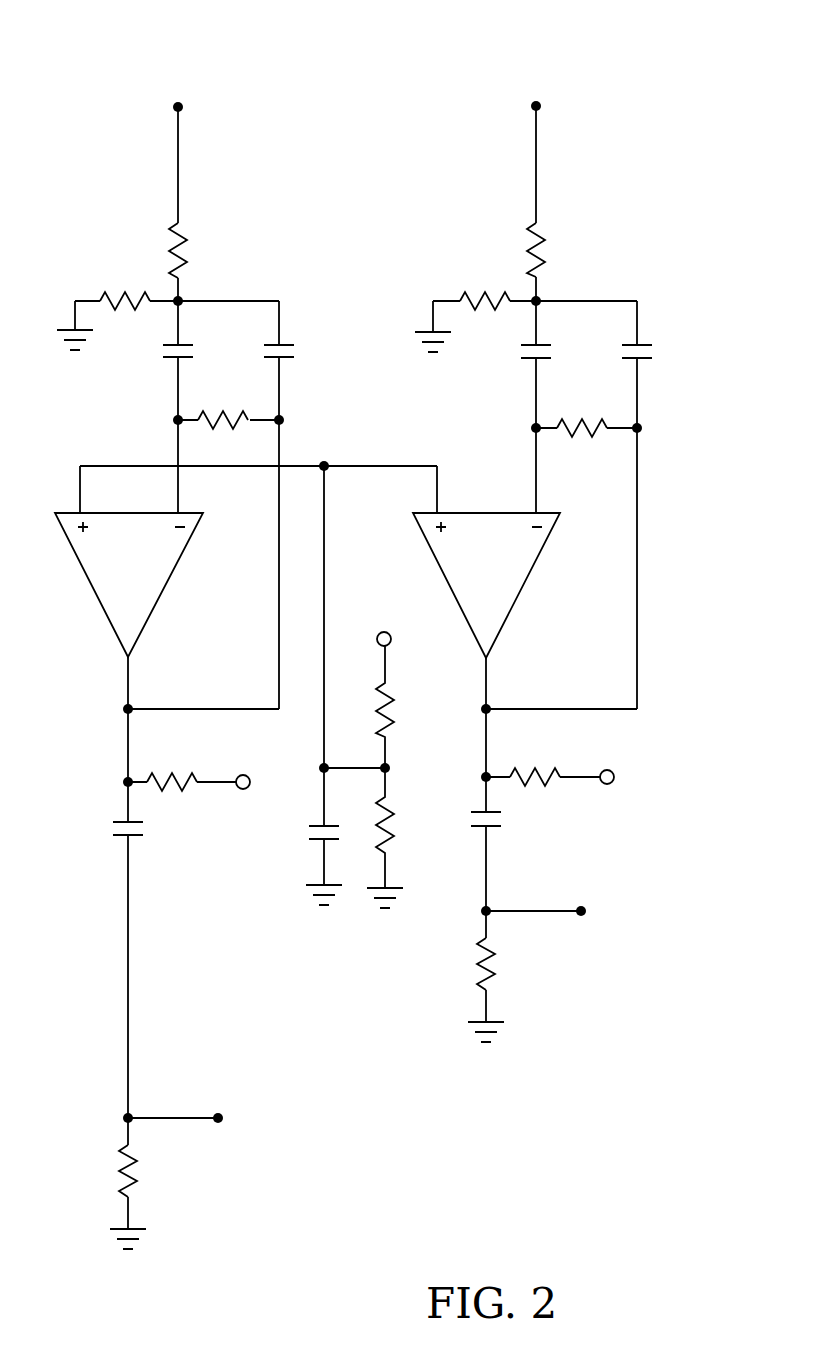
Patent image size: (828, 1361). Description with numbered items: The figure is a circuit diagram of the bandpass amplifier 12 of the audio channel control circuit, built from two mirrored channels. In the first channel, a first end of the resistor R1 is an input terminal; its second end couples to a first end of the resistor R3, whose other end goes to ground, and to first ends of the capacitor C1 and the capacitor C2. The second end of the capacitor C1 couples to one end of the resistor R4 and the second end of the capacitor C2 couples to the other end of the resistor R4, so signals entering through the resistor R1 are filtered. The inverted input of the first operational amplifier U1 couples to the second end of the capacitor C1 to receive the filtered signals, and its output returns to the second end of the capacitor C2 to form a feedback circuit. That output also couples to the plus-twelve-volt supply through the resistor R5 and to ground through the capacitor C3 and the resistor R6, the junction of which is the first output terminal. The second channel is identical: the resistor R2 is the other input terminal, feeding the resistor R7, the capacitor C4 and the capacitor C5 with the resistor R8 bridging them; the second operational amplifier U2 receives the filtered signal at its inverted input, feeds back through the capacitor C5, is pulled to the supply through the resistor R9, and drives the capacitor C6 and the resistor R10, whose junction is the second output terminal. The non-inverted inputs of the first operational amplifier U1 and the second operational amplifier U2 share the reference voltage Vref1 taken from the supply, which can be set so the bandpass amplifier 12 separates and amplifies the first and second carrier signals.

The bandpass amplifier 12 is at (340, 39).
The resistor R1 is at (202, 250).
The resistor R2 is at (563, 250).
The resistor R3 is at (125, 288).
The resistor R4 is at (223, 404).
The resistor R5 is at (172, 764).
The resistor R6 is at (109, 1171).
The resistor R7 is at (485, 288).
The resistor R8 is at (588, 413).
The resistor R9 is at (535, 762).
The resistor R10 is at (458, 964).
The capacitor C1 is at (161, 356).
The capacitor C2 is at (298, 356).
The capacitor C3 is at (110, 828).
The capacitor C4 is at (519, 353).
The capacitor C5 is at (656, 353).
The capacitor C6 is at (509, 823).
The first operational amplifier U1 is at (129, 585).
The second operational amplifier U2 is at (486, 585).
The reference voltage Vref1 is at (324, 466).